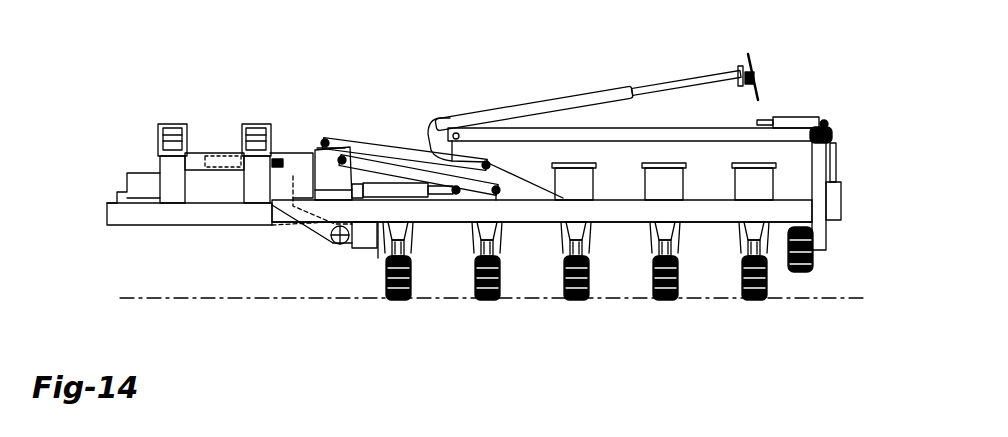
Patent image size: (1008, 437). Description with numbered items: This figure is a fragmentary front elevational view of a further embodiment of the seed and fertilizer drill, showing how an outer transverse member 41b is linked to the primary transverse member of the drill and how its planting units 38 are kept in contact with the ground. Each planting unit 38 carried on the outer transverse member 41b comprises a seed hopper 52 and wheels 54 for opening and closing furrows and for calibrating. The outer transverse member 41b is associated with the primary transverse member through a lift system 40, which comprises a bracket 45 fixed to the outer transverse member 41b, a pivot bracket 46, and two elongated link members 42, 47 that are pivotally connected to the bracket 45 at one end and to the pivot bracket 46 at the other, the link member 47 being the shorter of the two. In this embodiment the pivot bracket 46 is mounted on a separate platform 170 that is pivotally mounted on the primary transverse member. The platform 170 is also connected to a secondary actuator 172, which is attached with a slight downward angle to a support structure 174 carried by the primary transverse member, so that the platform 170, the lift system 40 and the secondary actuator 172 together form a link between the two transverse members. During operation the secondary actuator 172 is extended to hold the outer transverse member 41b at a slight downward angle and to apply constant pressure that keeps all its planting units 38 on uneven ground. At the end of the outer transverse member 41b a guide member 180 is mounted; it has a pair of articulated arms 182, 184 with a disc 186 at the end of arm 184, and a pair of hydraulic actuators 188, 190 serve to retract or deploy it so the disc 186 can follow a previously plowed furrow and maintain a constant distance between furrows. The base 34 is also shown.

The platform base 34 is at (181, 232).
The planting unit 38 is at (370, 256).
The lift system 40 is at (334, 122).
The outer transverse member 41b is at (622, 230).
The elongated link member 42 is at (358, 160).
The bracket 45 is at (527, 188).
The pivot bracket 46 is at (317, 148).
The elongated link member 47 is at (386, 165).
The seed hopper 52 is at (673, 180).
The wheels 54 is at (402, 297).
The platform 170 is at (366, 218).
The secondary actuator 172 is at (286, 158).
The support structure 174 is at (289, 227).
The guide member 180 is at (496, 98).
The articulated arm 182 is at (667, 132).
The articulated arm 184 is at (650, 85).
The disc 186 is at (752, 63).
The hydraulic actuator 188 is at (839, 214).
The hydraulic actuator 190 is at (798, 118).